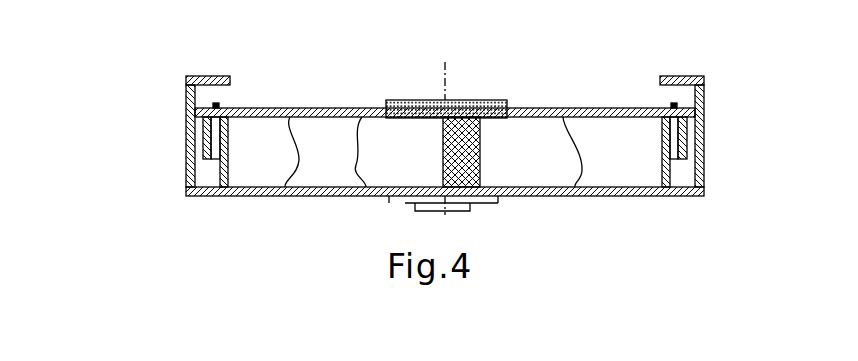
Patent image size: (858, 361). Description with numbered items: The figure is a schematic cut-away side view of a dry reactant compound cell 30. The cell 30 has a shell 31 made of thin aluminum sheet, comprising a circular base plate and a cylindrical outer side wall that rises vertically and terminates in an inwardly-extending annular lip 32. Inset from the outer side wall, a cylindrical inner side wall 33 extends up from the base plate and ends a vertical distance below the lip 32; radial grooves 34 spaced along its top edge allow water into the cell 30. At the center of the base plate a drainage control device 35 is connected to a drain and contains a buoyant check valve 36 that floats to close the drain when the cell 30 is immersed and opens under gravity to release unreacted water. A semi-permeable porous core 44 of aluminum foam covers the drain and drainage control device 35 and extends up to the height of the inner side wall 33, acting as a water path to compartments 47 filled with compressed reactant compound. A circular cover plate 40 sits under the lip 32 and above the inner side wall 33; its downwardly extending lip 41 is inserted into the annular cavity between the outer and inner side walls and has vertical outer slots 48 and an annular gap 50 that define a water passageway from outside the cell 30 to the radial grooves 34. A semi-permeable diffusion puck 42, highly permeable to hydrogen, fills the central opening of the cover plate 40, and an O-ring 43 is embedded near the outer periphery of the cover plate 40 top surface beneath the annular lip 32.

The cell 30 is at (757, 140).
The shell 31 is at (538, 197).
The annular lip 32 is at (187, 76).
The inner side wall 33 is at (219, 171).
The radial grooves 34 is at (670, 125).
The drainage control device 35 is at (402, 202).
The buoyant check valve 36 is at (467, 210).
The cover plate 40 is at (307, 108).
The downwardly extending lip 41 is at (205, 120).
The semi-permeable diffusion puck 42 is at (410, 100).
The O-ring 43 is at (677, 108).
The semi-permeable porous core 44 is at (481, 141).
The compartments 47 is at (622, 155).
The outer slots 48 is at (200, 138).
The annular gap 50 is at (199, 152).